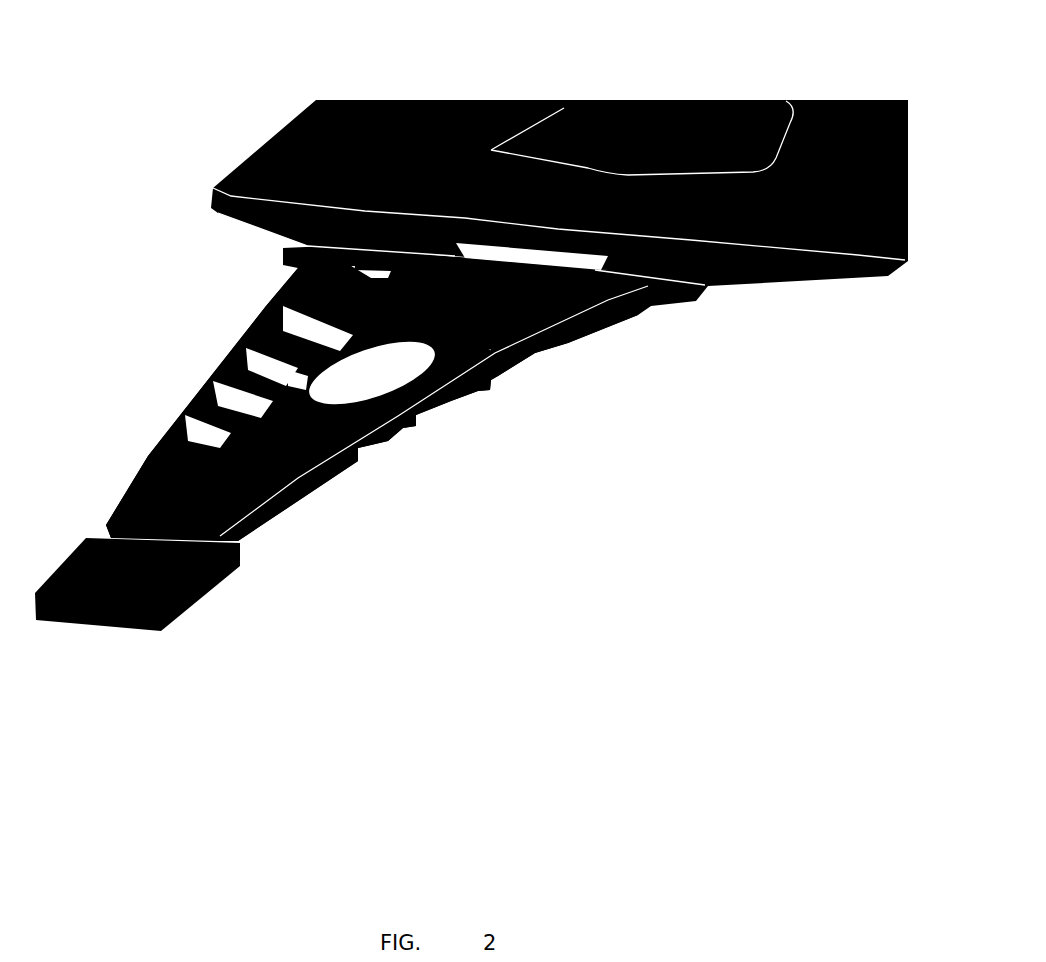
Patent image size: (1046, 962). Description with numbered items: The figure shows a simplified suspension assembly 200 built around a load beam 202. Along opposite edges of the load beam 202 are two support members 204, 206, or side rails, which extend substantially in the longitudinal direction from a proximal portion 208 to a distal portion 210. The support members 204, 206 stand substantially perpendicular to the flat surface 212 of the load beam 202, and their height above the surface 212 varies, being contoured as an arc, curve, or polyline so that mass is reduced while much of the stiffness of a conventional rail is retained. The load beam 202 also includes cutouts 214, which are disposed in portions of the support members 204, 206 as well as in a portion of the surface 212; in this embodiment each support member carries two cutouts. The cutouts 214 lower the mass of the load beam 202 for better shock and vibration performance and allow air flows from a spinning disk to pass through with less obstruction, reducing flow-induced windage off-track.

The suspension assembly 200 is at (469, 339).
The load beam 202 is at (407, 393).
The support member 204 is at (433, 423).
The support member 206 is at (262, 398).
The proximal portion 208 is at (559, 237).
The distal portion 210 is at (201, 595).
The surface 212 is at (336, 462).
The cutouts 214 is at (376, 378).